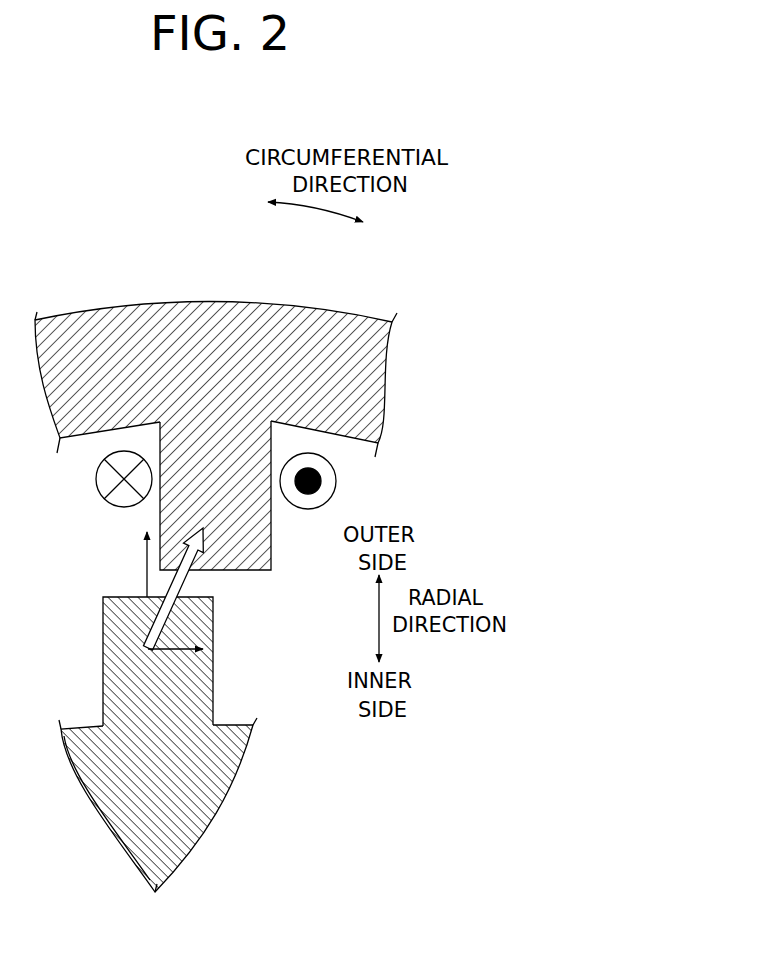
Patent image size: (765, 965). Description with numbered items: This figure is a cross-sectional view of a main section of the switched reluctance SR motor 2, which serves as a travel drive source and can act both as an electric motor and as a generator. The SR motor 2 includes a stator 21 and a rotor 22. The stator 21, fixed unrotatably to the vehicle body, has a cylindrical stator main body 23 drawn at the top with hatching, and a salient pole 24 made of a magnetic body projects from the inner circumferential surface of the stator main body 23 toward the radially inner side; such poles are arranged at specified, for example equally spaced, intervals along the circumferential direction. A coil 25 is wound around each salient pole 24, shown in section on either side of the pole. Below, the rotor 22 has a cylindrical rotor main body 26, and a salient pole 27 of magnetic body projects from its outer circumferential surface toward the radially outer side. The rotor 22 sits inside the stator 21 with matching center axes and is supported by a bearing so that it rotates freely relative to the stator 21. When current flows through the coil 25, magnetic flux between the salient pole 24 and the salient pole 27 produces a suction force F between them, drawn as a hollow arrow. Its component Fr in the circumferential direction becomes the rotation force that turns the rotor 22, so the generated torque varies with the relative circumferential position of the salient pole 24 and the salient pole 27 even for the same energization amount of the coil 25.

The SR motor 2 is at (218, 377).
The stator 21 is at (216, 407).
The rotor 22 is at (174, 744).
The stator main body 23 is at (352, 312).
The salient pole 24 is at (273, 538).
The coil 25 is at (337, 481).
The rotor main body 26 is at (222, 722).
The salient pole 27 is at (214, 615).
The suction force F is at (183, 585).
The component in the circumferential direction of the suction force Fr is at (176, 647).